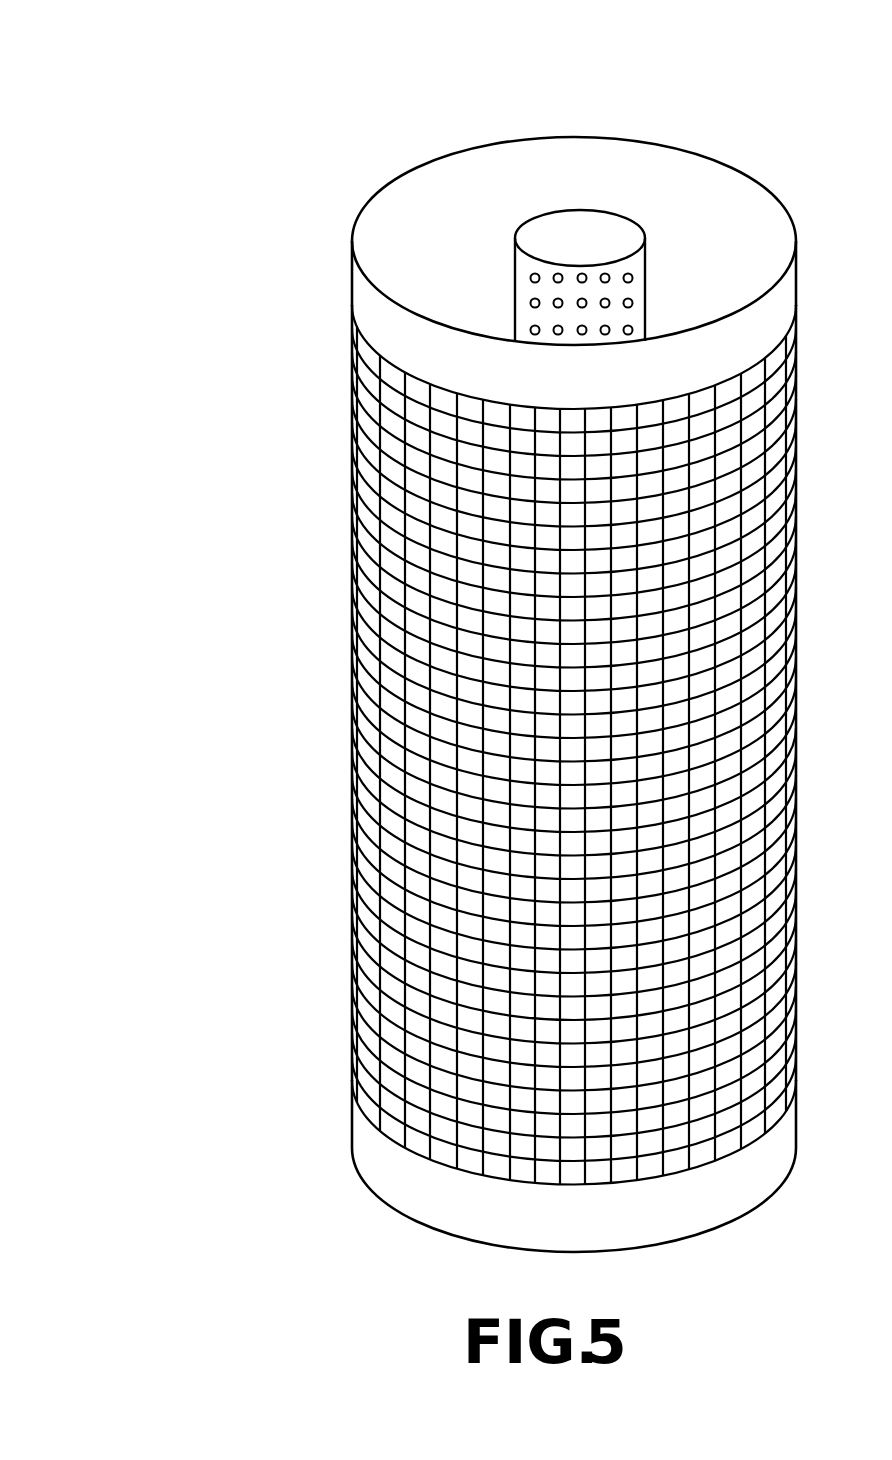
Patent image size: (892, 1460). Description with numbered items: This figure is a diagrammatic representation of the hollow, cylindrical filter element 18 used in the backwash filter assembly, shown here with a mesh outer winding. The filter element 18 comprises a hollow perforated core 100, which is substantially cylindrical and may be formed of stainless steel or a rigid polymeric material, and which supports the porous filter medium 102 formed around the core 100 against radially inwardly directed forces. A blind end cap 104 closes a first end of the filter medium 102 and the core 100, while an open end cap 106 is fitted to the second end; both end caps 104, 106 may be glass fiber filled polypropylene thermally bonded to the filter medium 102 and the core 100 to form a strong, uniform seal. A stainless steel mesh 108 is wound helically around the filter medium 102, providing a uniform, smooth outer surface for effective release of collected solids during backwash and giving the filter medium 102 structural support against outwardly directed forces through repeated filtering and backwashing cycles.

The filter element 18 is at (167, 344).
The hollow perforated core 100 is at (596, 213).
The porous filter medium 102 is at (438, 158).
The blind end cap 104 is at (352, 1128).
The open end cap 106 is at (352, 278).
The stainless steel mesh 108 is at (352, 685).